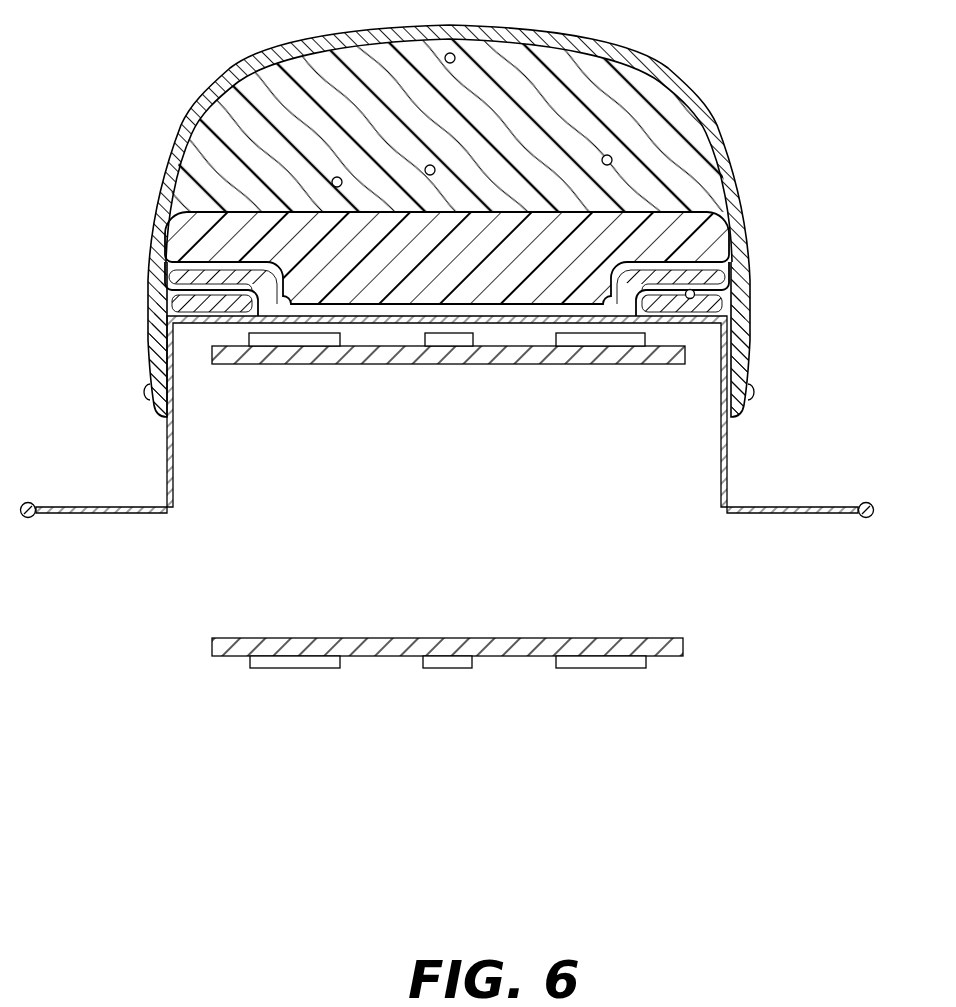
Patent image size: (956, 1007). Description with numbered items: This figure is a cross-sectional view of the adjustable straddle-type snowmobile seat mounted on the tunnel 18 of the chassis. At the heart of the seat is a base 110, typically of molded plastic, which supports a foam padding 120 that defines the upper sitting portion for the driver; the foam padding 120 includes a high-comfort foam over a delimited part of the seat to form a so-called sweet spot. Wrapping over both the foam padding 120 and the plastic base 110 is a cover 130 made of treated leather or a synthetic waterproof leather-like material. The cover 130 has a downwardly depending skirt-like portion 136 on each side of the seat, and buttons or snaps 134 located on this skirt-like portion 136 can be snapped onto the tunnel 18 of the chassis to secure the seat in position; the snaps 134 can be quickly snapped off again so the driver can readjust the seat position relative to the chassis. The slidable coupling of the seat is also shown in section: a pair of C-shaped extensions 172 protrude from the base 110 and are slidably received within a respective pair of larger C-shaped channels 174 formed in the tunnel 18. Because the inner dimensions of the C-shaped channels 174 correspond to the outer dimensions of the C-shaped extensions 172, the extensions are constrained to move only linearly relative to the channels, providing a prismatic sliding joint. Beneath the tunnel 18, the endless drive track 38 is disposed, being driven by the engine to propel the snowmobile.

The tunnel 18 is at (725, 357).
The endless drive track 38 is at (498, 358).
The base 110 is at (476, 266).
The foam padding 120 is at (473, 108).
The cover 130 is at (717, 123).
The snaps 134 is at (148, 398).
The skirt-like portion 136 is at (148, 358).
The C-shaped extensions 172 is at (168, 300).
The C-shaped channels 174 is at (175, 270).